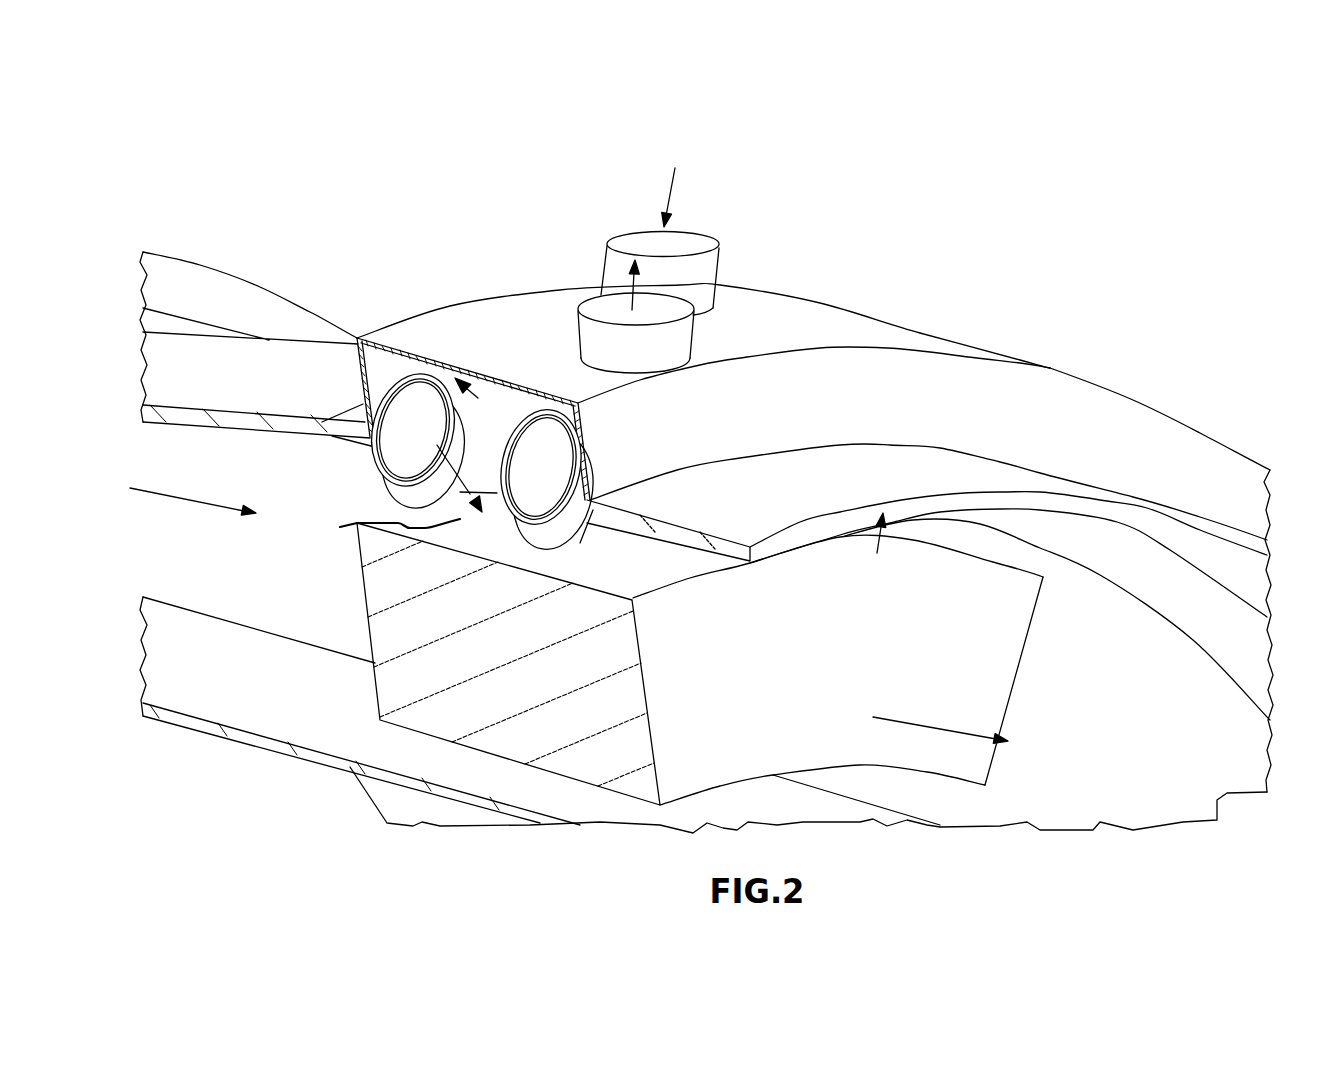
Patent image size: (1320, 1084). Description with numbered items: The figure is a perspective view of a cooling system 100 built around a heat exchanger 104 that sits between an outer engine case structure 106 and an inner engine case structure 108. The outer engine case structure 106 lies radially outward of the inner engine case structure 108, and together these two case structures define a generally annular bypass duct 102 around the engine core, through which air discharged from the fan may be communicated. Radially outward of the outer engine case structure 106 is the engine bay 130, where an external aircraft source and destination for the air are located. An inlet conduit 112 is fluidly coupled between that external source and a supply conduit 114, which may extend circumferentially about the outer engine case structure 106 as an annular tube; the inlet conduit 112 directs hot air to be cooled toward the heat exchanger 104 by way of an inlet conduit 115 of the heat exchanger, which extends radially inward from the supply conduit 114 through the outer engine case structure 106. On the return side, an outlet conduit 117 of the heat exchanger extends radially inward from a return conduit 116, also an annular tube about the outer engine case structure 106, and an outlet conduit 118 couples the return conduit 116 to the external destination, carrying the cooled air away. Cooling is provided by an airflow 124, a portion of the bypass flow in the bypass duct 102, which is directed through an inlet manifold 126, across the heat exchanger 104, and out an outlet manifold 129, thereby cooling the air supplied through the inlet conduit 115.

The cooling system 100 is at (302, 196).
The engine bay 130 is at (469, 166).
The inlet conduit 112 is at (620, 258).
The outlet conduit 118 is at (603, 310).
The supply conduit 114 is at (407, 377).
The return conduit 116 is at (557, 433).
The airflow 124 is at (175, 496).
The bypass duct 102 is at (173, 558).
The inlet conduit of heat exchanger 115 is at (531, 530).
The heat exchanger 104 is at (387, 633).
The inlet manifold 126 is at (375, 690).
The inner engine case structure 108 is at (258, 694).
The outer engine case structure 106 is at (759, 502).
The outlet conduit of heat exchanger 117 is at (897, 530).
The outlet manifold 129 is at (753, 692).